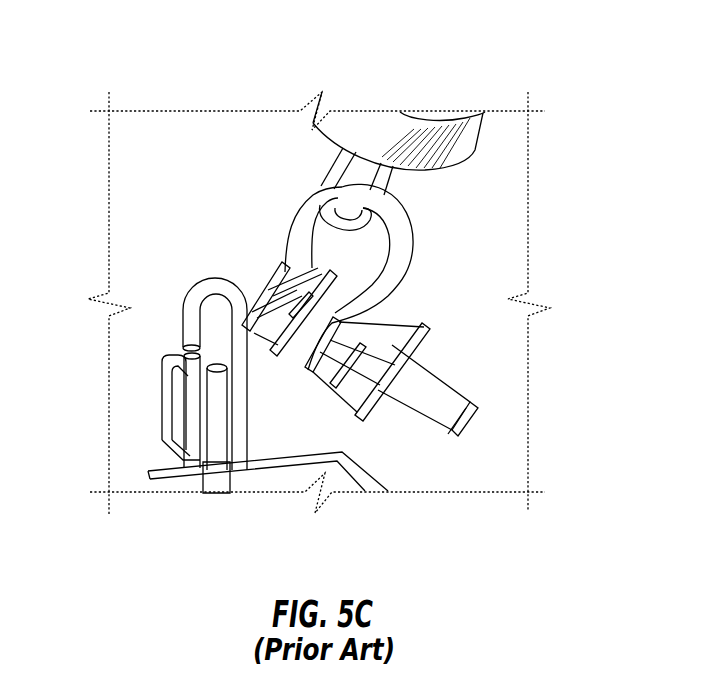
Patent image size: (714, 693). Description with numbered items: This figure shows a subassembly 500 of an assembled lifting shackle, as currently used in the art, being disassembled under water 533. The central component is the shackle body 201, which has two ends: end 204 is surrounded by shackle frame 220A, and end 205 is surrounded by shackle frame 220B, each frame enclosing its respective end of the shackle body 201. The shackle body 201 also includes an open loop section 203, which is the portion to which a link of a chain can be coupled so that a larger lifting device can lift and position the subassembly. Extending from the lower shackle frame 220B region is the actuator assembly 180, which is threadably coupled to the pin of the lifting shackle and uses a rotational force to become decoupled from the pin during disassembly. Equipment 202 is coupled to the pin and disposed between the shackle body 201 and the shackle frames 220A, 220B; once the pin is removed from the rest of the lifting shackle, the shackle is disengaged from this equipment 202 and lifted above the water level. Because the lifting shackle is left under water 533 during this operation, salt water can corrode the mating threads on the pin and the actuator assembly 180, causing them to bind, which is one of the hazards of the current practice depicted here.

The subassembly 500 is at (499, 82).
The water 533 is at (508, 418).
The shackle body 201 is at (402, 208).
The open loop section 203 is at (410, 243).
The shackle frame 220A is at (272, 263).
The shackle frame 220B is at (318, 385).
The end 204 is at (248, 302).
The end 205 is at (313, 352).
The actuator assembly 180 is at (431, 374).
The equipment 202 is at (165, 402).